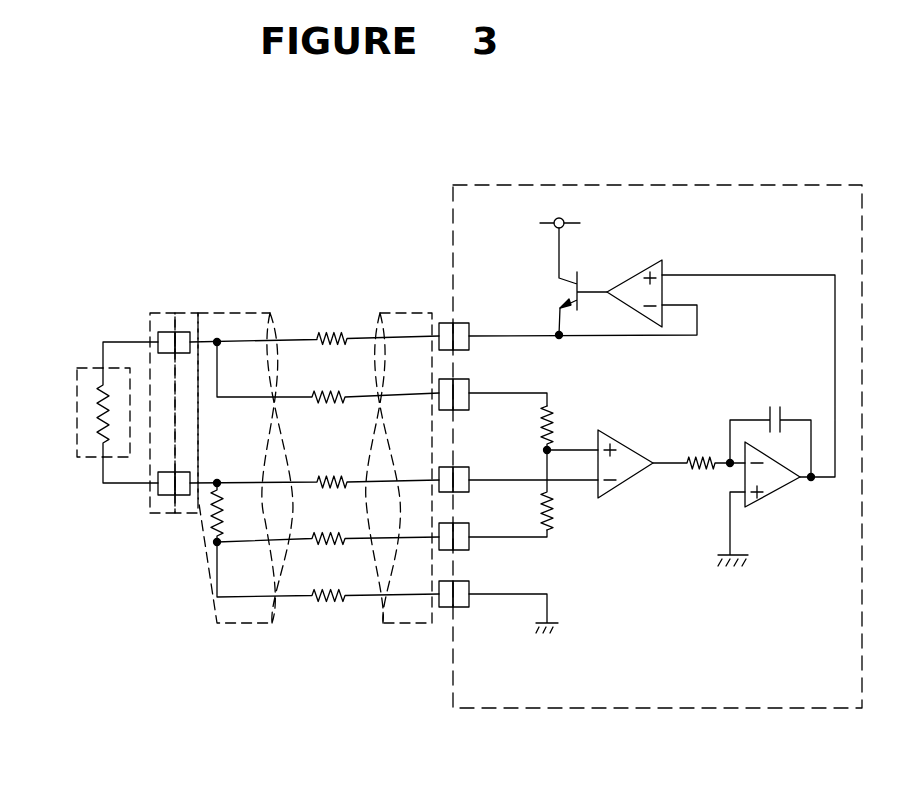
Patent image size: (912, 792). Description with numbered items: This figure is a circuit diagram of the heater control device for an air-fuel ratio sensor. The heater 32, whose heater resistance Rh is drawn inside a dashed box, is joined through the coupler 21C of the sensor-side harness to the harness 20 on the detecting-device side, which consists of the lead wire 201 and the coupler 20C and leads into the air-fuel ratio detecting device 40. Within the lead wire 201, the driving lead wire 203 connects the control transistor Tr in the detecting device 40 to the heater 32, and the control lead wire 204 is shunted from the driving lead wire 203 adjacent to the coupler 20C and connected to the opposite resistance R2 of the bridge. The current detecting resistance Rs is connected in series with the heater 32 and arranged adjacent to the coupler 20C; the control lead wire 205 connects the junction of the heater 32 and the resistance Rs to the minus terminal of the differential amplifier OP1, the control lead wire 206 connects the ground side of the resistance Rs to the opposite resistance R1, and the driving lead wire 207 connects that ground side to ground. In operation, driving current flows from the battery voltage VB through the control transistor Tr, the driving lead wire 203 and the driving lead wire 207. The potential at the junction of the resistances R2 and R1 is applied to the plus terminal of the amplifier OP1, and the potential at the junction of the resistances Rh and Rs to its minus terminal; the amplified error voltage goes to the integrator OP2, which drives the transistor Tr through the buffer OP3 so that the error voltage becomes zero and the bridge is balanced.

The harness 20 is at (420, 265).
The coupler 20C is at (191, 313).
The coupler 21C is at (162, 313).
The lead wire 201 is at (347, 295).
The driving lead wire 203 is at (345, 334).
The control lead wire 204 is at (382, 374).
The control lead wire 205 is at (327, 478).
The control lead wire 206 is at (327, 536).
The driving lead wire 207 is at (326, 593).
The heater 32 is at (88, 368).
The air-fuel ratio detecting device 40 is at (642, 710).
The heater resistance Rh is at (88, 428).
The current detecting resistance Rs is at (222, 512).
The opposite resistance R1 is at (573, 498).
The opposite resistance R2 is at (556, 437).
The differential amplifier OP1 is at (671, 479).
The integrator OP2 is at (749, 420).
The buffer OP3 is at (647, 277).
The control transistor Tr is at (557, 292).
The battery voltage VB is at (583, 215).